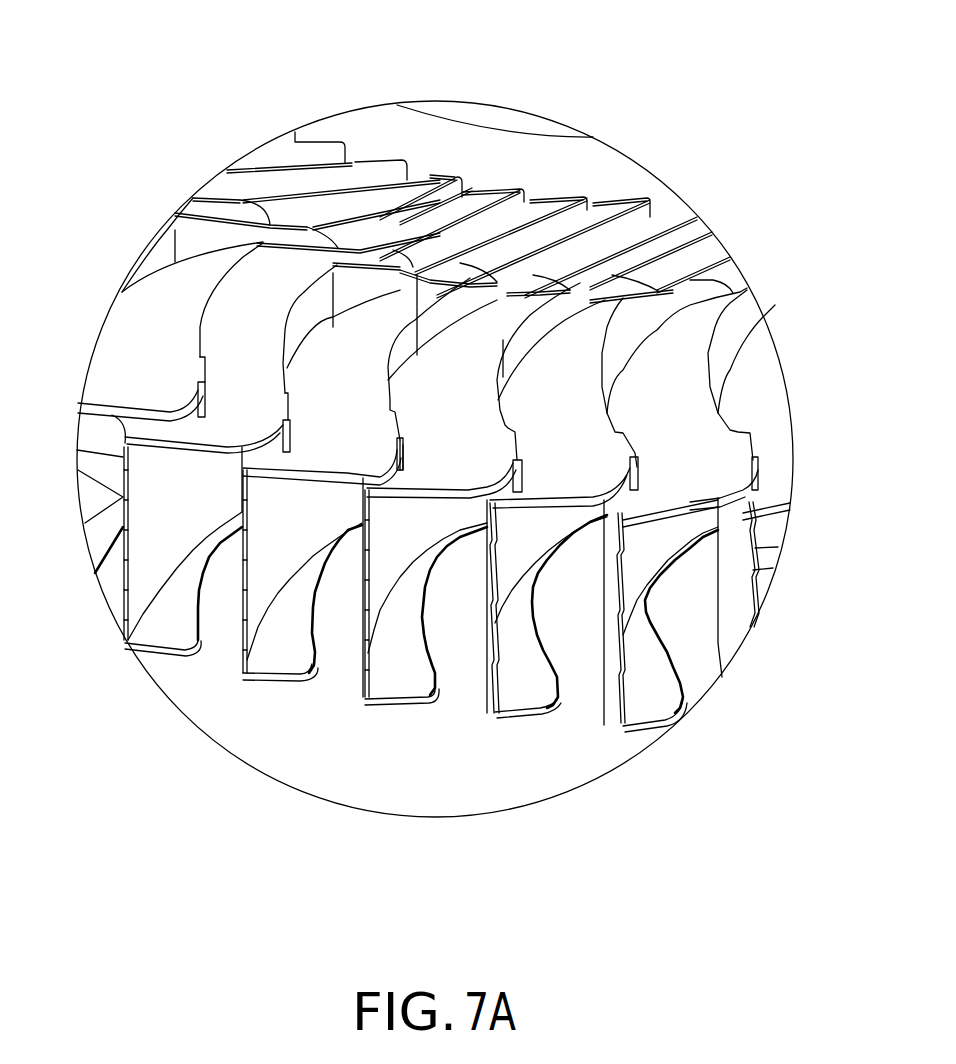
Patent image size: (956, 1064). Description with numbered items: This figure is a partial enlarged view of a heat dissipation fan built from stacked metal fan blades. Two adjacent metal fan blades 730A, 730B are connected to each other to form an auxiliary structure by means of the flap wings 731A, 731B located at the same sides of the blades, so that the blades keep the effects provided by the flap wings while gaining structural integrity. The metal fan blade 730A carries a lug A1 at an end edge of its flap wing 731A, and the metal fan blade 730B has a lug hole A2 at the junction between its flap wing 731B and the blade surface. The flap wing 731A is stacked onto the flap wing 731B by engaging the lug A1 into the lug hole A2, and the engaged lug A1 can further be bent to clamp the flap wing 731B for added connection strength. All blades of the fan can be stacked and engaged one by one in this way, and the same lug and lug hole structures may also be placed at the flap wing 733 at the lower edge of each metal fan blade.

The flap wing 731A is at (367, 340).
The flap wing 731B is at (481, 352).
The metal fan blade 730A is at (237, 695).
The metal fan blade 730B is at (398, 717).
The flap wing 733 is at (524, 683).
The lug A1 is at (403, 443).
The lug hole A2 is at (415, 468).